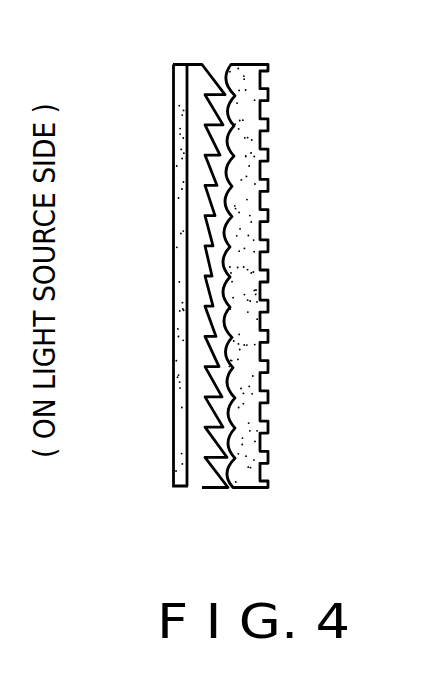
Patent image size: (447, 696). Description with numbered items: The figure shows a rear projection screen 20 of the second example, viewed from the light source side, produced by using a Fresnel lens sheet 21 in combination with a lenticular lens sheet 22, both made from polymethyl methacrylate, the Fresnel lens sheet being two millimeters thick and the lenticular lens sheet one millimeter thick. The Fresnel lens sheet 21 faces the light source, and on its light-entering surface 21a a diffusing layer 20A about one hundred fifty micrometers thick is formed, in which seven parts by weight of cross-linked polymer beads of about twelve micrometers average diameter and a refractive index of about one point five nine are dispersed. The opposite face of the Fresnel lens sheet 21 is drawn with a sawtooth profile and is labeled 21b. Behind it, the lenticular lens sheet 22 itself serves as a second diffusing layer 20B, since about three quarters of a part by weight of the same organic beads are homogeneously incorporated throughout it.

The rear projection screen 20 is at (268, 530).
The diffusing layer 20A is at (180, 63).
The diffusing layer 20B is at (250, 65).
The Fresnel lens sheet 21 is at (190, 482).
The light-entering surface 21a is at (173, 255).
The prism surface 21b is at (210, 318).
The lenticular lens sheet 22 is at (245, 484).